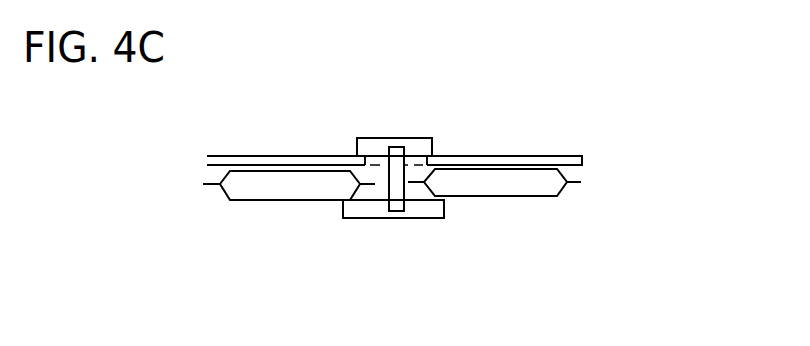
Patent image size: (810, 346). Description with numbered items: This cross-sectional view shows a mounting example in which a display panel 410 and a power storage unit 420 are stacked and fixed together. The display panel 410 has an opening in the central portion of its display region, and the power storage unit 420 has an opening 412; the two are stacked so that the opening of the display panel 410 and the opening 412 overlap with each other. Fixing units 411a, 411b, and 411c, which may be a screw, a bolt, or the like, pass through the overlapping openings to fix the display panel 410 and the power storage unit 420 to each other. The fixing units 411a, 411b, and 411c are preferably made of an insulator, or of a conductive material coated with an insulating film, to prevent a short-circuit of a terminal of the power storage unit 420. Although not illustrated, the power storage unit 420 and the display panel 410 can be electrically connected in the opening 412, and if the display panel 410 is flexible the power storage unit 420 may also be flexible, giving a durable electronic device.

The display panel 410 is at (272, 160).
The power storage unit 420 is at (280, 192).
The fixing unit 411a is at (377, 145).
The fixing unit 411b is at (400, 150).
The fixing unit 411c is at (417, 213).
The opening 412 is at (375, 193).